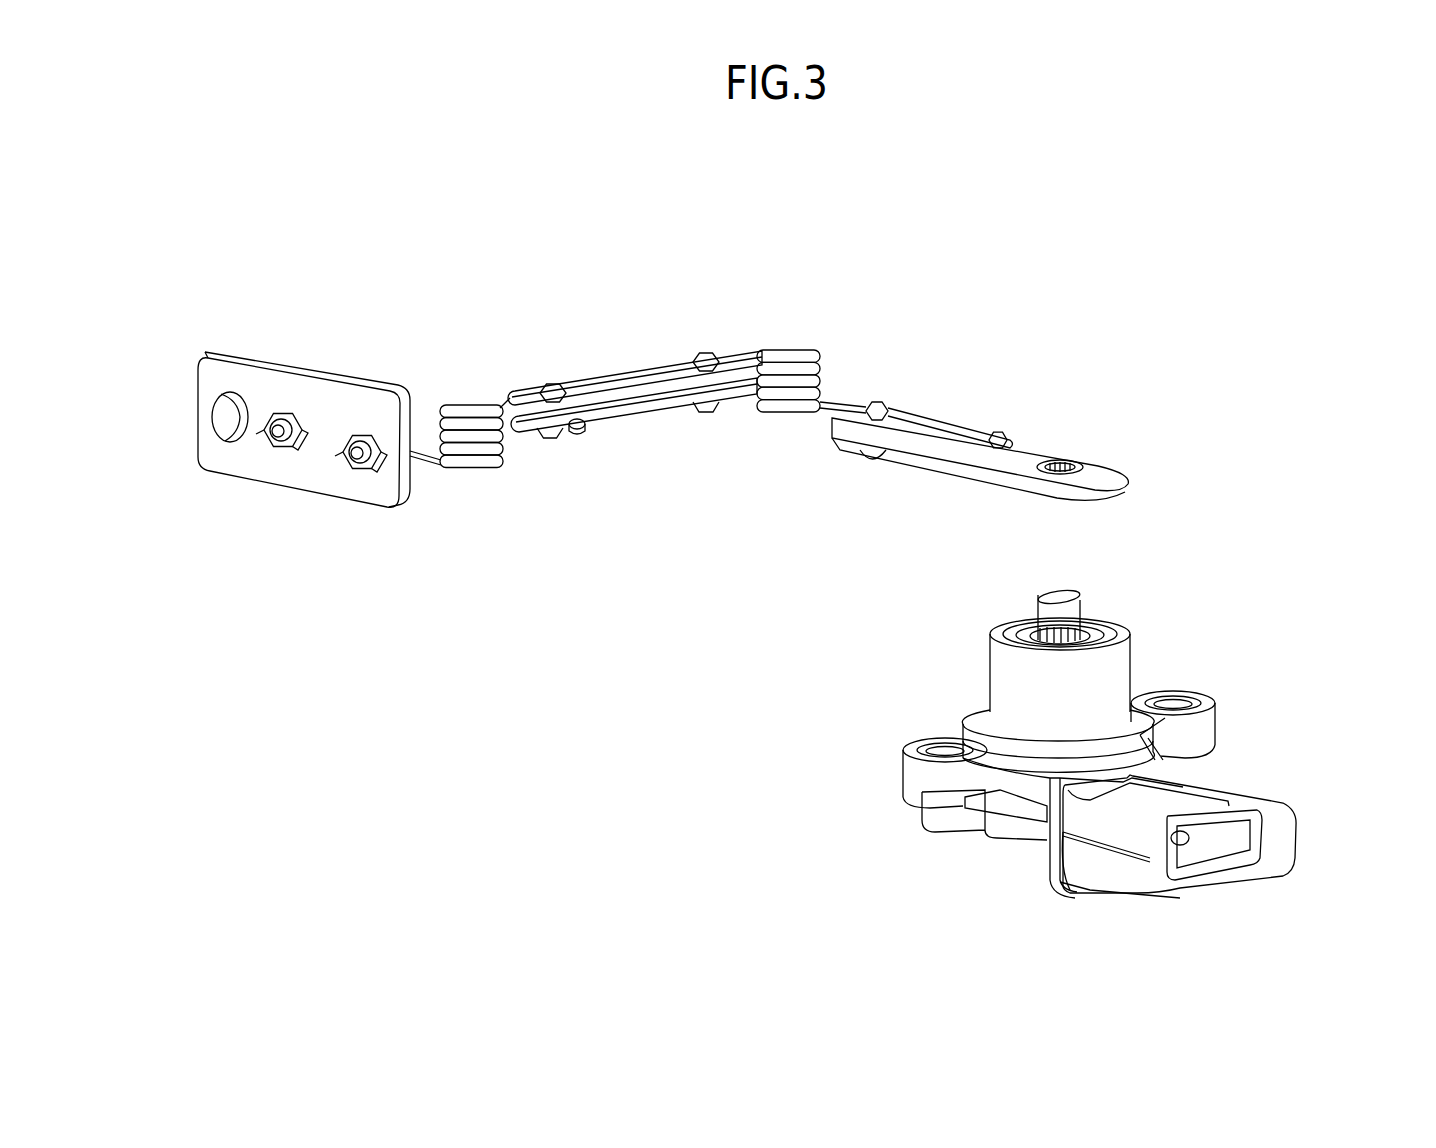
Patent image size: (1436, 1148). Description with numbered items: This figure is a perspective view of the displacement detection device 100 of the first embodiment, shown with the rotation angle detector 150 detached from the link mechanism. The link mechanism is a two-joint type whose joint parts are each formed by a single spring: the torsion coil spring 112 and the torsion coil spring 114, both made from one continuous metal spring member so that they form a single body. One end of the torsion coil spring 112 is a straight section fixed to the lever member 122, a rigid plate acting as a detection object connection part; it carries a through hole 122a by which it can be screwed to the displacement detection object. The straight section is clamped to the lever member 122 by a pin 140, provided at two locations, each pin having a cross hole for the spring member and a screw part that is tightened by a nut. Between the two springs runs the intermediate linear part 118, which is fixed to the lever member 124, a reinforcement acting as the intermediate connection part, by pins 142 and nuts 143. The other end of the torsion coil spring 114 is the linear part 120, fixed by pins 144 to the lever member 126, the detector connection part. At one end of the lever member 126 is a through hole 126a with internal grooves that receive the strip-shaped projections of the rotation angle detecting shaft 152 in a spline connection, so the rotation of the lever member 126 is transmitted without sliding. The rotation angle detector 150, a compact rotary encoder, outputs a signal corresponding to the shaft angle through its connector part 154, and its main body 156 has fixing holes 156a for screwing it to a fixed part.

The displacement detection device 100 is at (616, 189).
The torsion coil spring 112 is at (484, 468).
The torsion coil spring 114 is at (783, 414).
The intermediate linear part 118 is at (632, 384).
The linear part 120 is at (928, 424).
The lever member 122 is at (314, 385).
The through hole 122a is at (235, 410).
The lever member 124 is at (645, 410).
The lever member 126 is at (926, 462).
The through hole 126a is at (1058, 460).
The pin 140 is at (274, 432).
The pin 142 is at (286, 448).
The nut 143 is at (580, 436).
The pin 144 is at (877, 402).
The rotation angle detector 150 is at (1102, 722).
The rotation angle detecting shaft 152 is at (1078, 632).
The connector part 154 is at (1250, 802).
The main body 156 is at (980, 722).
The fixing hole 156a is at (948, 750).